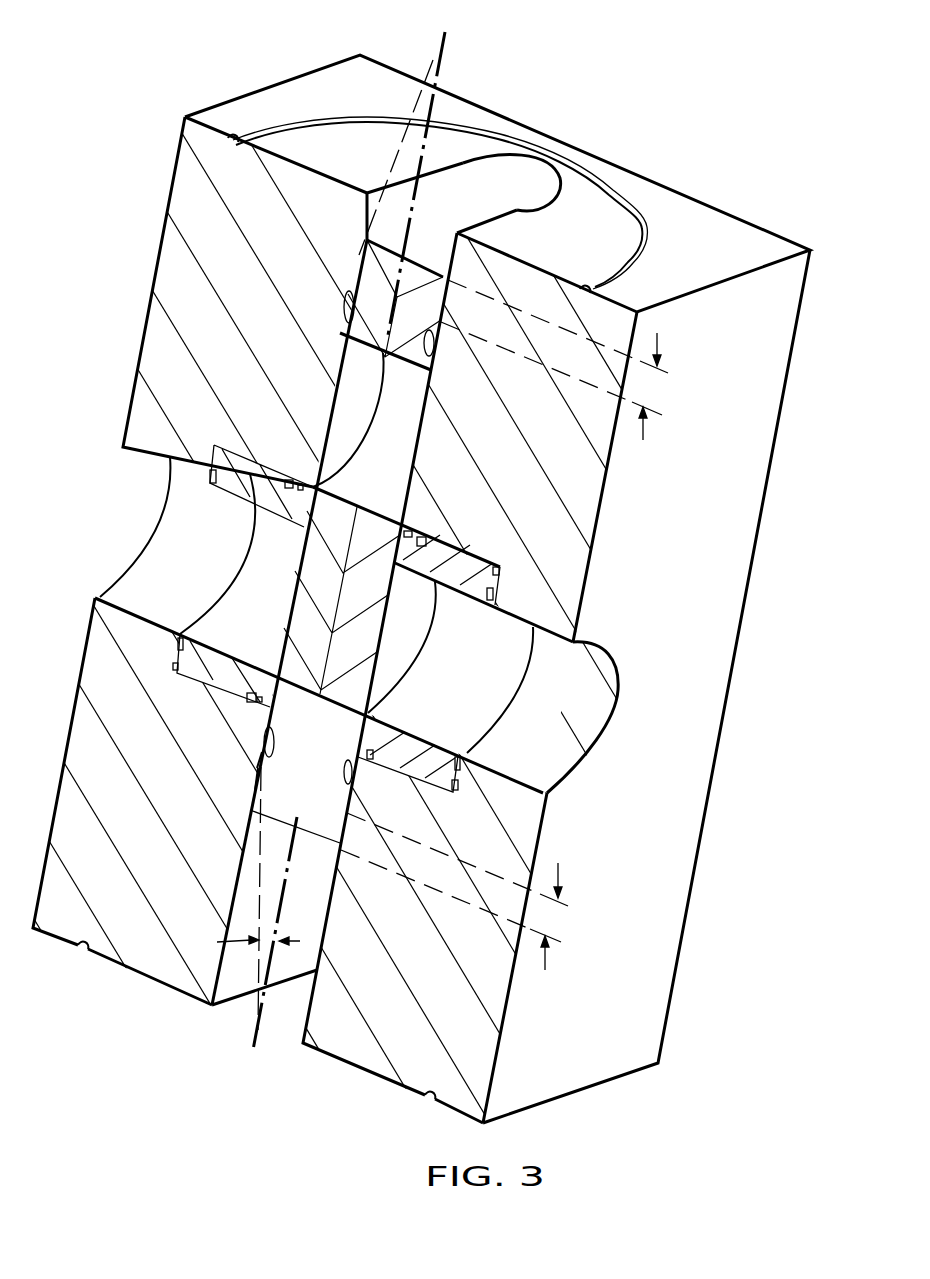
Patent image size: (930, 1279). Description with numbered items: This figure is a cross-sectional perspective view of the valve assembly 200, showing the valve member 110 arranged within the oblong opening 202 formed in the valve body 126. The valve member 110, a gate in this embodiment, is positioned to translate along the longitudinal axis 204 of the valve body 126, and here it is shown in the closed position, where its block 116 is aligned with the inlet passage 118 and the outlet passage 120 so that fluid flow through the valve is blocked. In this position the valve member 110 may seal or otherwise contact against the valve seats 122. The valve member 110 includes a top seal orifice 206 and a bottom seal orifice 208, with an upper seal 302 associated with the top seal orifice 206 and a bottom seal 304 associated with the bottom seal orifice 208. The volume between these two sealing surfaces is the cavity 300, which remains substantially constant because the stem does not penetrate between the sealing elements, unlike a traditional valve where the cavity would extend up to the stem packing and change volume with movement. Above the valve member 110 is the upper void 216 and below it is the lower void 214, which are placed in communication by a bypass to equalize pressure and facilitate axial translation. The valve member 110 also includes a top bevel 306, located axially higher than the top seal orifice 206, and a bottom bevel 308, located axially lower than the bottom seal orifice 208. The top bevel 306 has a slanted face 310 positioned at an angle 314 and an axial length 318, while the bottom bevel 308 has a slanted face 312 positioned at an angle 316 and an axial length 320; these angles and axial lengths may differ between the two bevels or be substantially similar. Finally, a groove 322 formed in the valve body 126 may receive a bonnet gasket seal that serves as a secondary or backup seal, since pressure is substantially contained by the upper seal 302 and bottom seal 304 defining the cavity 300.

The valve assembly 200 is at (690, 70).
The valve member 110 is at (470, 215).
The oblong opening 202 is at (550, 183).
The groove 322 is at (301, 125).
The angle 314 is at (393, 140).
The upper void 216 is at (426, 155).
The valve body 126 is at (728, 655).
The axial length 318 is at (660, 334).
The cavity 300 is at (432, 424).
The slanted face 310 is at (365, 240).
The top bevel 306 is at (355, 252).
The upper seal 302 is at (345, 303).
The top seal orifice 206 is at (345, 325).
The inlet passage 118 is at (143, 547).
The valve seats 122 is at (228, 662).
The block 116 is at (428, 628).
The outlet passage 120 is at (607, 708).
The bottom seal 304 is at (262, 728).
The bottom seal orifice 208 is at (262, 758).
The bottom bevel 308 is at (257, 780).
The slanted face 312 is at (257, 807).
The longitudinal axis 204 is at (338, 850).
The angle 316 is at (300, 941).
The lower void 214 is at (232, 1007).
The axial length 320 is at (548, 968).